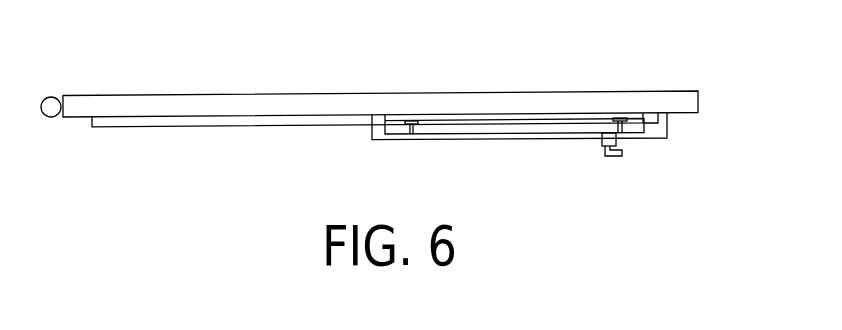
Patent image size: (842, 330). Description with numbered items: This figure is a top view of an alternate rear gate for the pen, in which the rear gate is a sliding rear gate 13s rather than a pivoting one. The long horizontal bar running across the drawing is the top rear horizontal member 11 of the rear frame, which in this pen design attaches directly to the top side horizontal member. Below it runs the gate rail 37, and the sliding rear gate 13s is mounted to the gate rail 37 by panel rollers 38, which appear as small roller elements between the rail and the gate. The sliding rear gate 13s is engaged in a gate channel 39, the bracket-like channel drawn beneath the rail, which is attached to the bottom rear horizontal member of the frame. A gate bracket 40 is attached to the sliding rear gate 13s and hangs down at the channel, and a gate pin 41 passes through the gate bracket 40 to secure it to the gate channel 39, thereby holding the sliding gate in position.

The top rear horizontal member 11 is at (489, 93).
The gate rail 37 is at (119, 127).
The panel rollers 38 is at (418, 134).
The gate channel 39 is at (372, 136).
The gate bracket 40 is at (599, 143).
The gate pin 41 is at (619, 158).
The sliding rear gate 13s is at (648, 124).